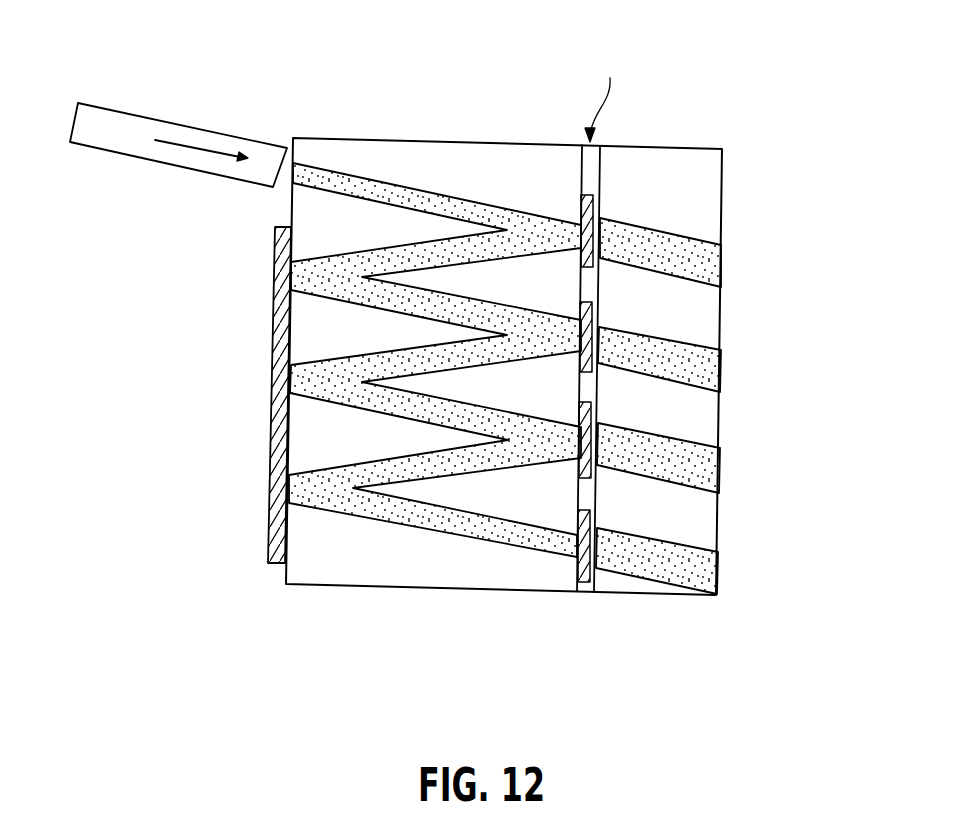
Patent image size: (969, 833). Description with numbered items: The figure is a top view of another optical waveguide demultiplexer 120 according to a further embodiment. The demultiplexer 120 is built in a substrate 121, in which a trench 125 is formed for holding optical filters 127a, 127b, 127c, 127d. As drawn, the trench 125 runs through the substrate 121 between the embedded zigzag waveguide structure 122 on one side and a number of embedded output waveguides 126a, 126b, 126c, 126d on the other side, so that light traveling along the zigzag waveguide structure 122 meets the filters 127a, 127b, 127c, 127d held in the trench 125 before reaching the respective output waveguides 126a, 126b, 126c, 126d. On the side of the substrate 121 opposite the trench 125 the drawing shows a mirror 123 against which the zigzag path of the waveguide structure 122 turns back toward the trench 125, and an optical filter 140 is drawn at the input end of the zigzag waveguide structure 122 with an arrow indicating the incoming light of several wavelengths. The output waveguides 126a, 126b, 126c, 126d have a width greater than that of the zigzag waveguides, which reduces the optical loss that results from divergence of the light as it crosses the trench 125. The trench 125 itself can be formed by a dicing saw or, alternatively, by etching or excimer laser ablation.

The demultiplexer 120 is at (456, 340).
The substrate 121 is at (724, 183).
The zigzag waveguide structure 122 is at (418, 186).
The mirror 123 is at (273, 325).
The trench 125 is at (599, 148).
The output waveguide 126a is at (692, 241).
The output waveguide 126b is at (693, 348).
The output waveguide 126c is at (693, 447).
The output waveguide 126d is at (688, 550).
The optical filter 127a is at (575, 256).
The optical filter 127b is at (578, 362).
The optical filter 127c is at (570, 463).
The optical filter 127d is at (575, 567).
The optical filter 140 is at (98, 148).